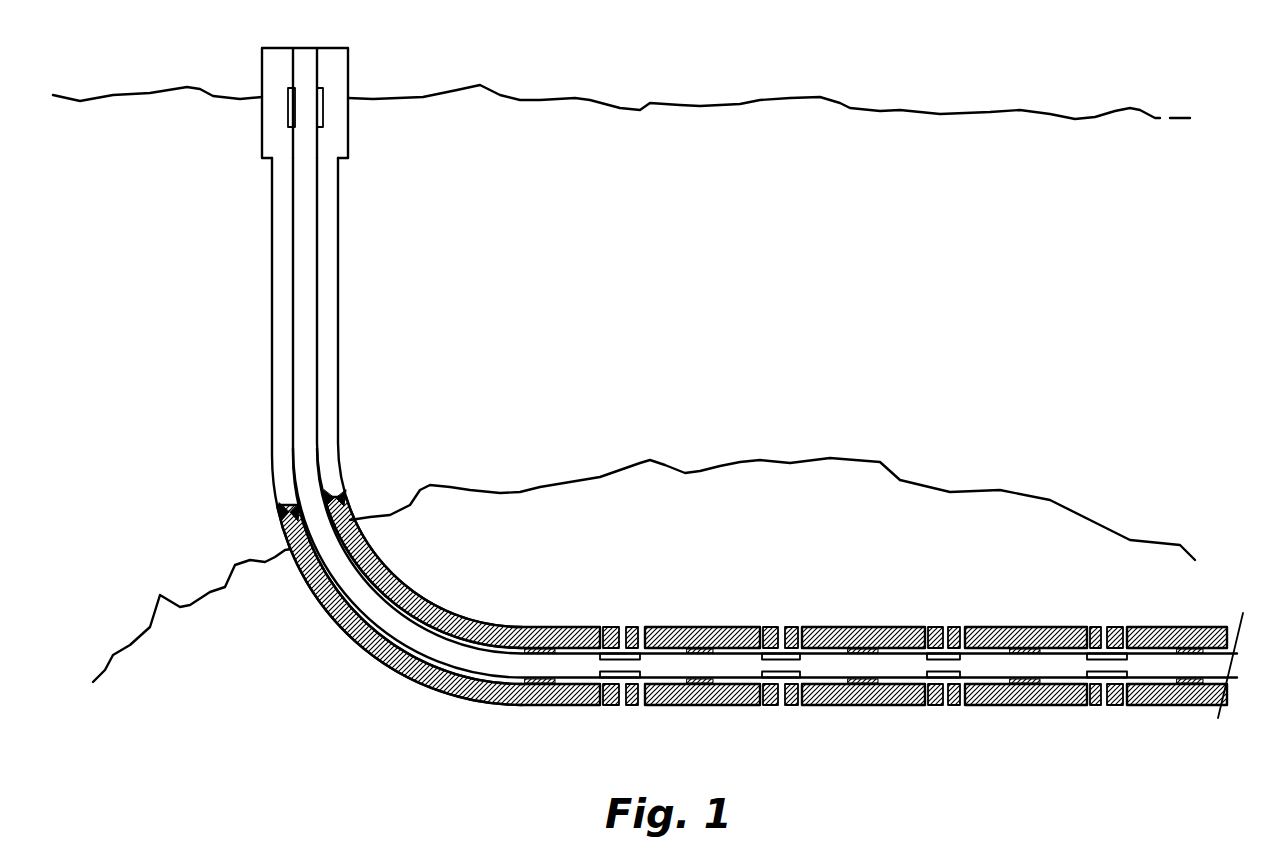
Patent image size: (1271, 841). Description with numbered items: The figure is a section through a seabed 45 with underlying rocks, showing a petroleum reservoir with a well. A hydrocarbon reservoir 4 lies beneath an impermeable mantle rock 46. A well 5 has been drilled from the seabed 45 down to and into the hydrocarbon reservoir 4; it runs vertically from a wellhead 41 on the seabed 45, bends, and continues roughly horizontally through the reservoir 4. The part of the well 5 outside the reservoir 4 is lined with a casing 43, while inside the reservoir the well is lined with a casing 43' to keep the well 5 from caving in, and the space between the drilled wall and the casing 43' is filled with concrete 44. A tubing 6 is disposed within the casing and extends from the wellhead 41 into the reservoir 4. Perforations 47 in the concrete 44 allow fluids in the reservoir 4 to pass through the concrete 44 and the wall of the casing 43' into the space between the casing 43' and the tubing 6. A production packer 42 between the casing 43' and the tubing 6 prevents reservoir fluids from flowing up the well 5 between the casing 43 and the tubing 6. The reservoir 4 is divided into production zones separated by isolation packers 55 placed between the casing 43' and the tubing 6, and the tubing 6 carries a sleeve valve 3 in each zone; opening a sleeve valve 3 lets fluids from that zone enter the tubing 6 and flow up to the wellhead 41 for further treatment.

The wellhead 41 is at (332, 67).
The seabed 45 is at (540, 98).
The casing 43 is at (397, 431).
The well 5 is at (330, 306).
The tubing 6 is at (305, 234).
The casing 43' is at (760, 611).
The concrete 44 is at (466, 627).
The production packer 42 is at (352, 488).
The sleeve valve 3 is at (762, 627).
The isolation packer 55 is at (538, 648).
The perforations 47 is at (798, 655).
The impermeable mantle rock 46 is at (787, 462).
The hydrocarbon reservoir 4 is at (616, 497).